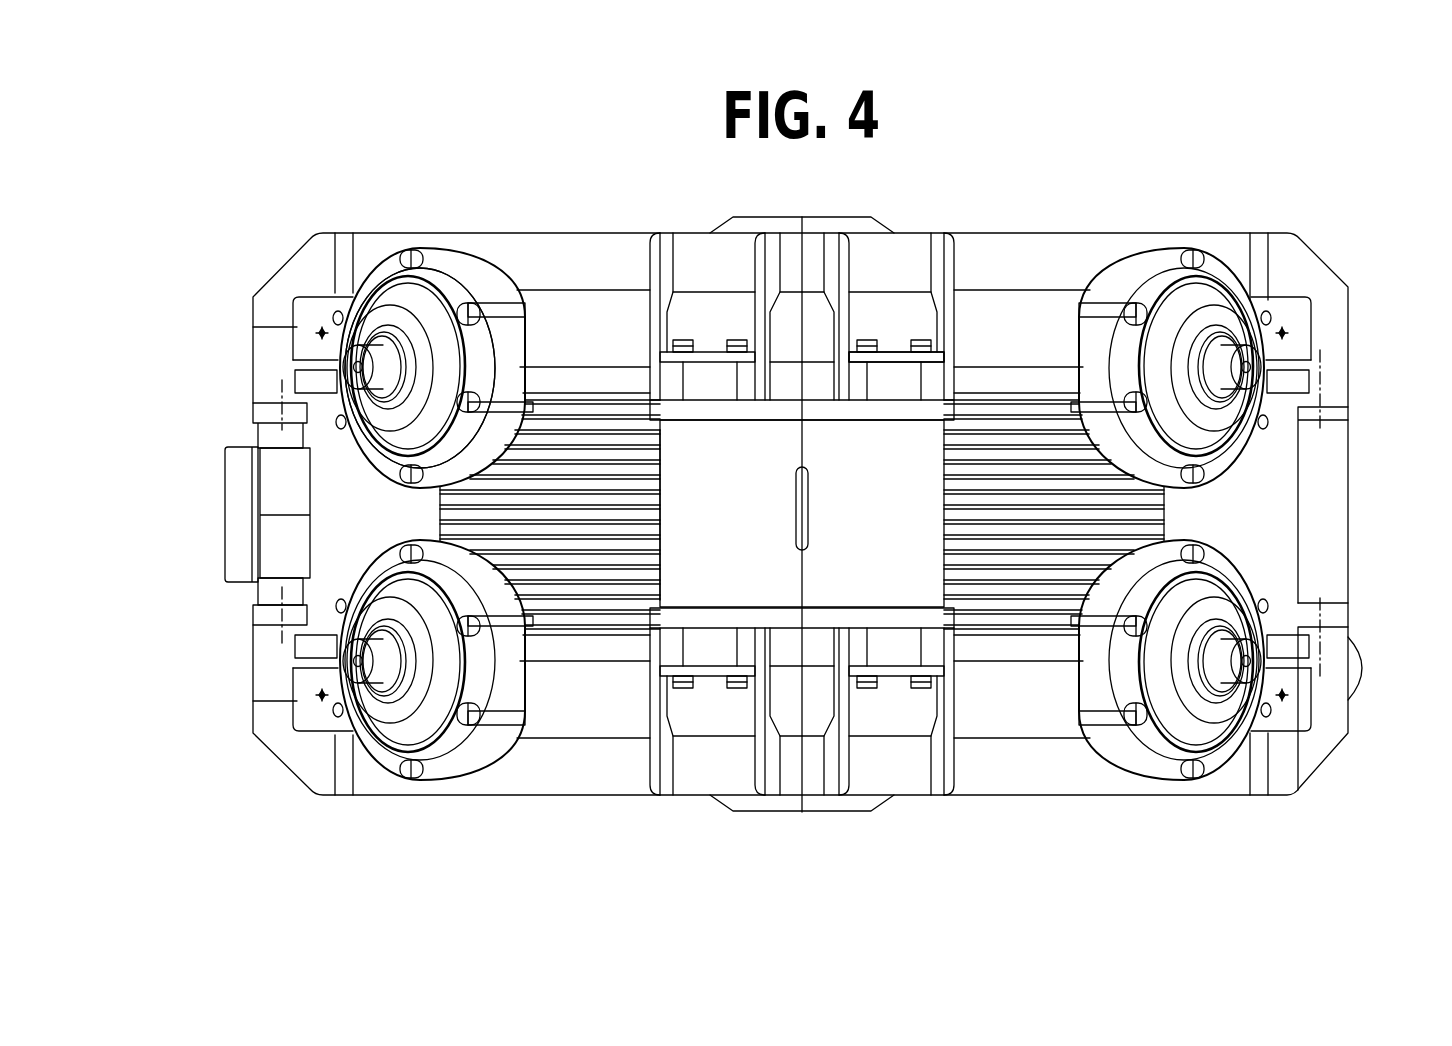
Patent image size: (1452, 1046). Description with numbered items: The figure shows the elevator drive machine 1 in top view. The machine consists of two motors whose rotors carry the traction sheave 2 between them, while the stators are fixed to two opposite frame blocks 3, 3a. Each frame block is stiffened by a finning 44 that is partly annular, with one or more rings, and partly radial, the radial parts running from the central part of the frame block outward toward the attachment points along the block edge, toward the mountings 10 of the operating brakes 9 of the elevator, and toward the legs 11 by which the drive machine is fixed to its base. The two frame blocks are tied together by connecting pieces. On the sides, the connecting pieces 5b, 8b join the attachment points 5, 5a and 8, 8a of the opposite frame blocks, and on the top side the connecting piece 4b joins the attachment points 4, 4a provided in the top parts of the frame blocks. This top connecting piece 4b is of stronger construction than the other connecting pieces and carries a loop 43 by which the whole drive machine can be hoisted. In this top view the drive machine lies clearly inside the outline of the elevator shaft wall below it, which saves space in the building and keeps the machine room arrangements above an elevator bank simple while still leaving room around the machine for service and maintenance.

The drive machine 1 is at (1012, 248).
The traction sheave 2 is at (1163, 507).
The frame block 3 is at (560, 757).
The frame block 3a is at (607, 327).
The attachment point 4 is at (735, 645).
The attachment point 4a is at (893, 357).
The top connecting piece 4b is at (690, 450).
The loop 43 is at (810, 507).
The finning 44 is at (950, 233).
The attachment point 5 is at (1333, 708).
The attachment point 5a is at (1348, 415).
The connecting piece 5b is at (1325, 537).
The attachment point 8 is at (258, 635).
The attachment point 8a is at (258, 412).
The connecting piece 8b is at (262, 597).
The operating brake 9 is at (397, 307).
The mounting 10 is at (460, 280).
The leg 11 is at (1283, 308).